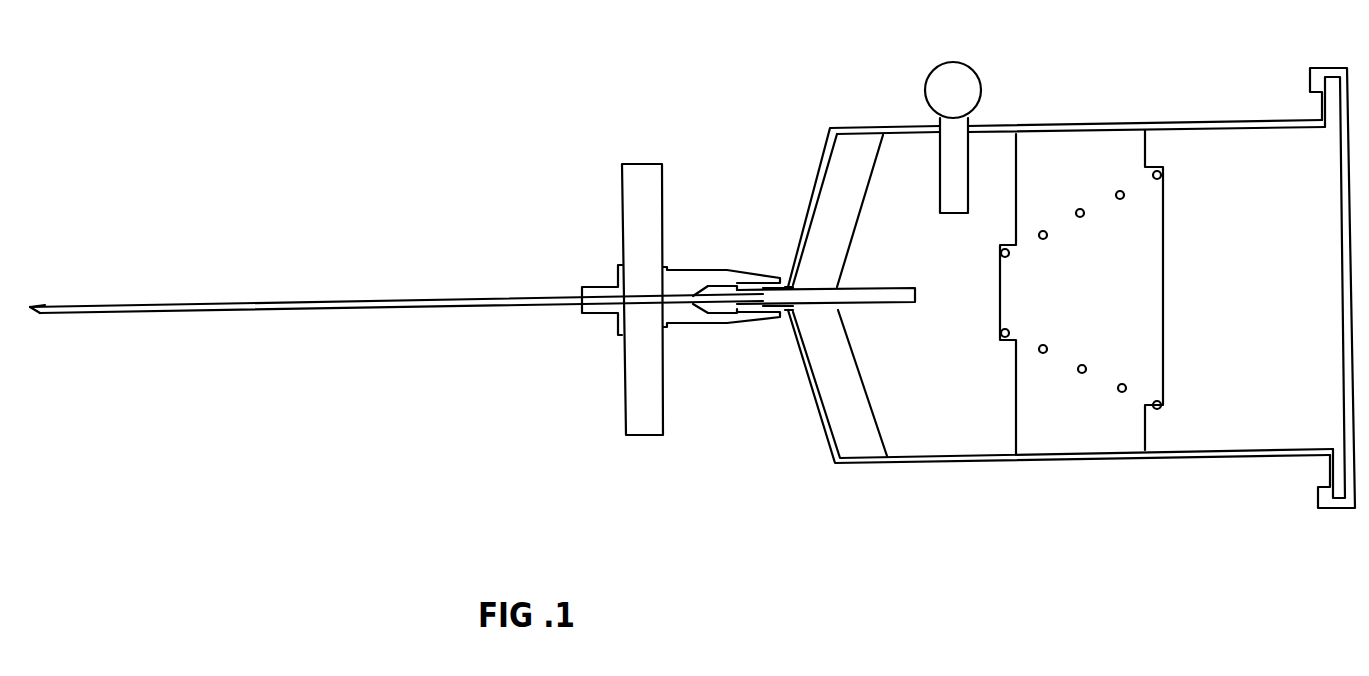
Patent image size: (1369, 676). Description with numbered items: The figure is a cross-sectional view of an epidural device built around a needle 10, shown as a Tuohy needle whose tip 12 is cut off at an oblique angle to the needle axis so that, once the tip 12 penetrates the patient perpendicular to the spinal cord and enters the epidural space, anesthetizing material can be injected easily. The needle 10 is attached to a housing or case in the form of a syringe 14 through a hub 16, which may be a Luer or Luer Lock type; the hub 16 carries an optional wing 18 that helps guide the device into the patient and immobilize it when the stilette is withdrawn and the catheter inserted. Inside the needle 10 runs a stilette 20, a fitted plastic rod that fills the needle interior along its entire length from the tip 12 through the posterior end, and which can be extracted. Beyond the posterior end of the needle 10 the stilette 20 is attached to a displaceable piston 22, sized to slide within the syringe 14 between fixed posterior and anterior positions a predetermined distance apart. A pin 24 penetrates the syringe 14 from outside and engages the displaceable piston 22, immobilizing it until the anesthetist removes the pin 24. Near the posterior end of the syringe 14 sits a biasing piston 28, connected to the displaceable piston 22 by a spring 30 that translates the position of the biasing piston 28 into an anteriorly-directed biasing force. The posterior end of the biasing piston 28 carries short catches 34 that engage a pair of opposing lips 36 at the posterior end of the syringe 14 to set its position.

The needle 10 is at (313, 302).
The tip 12 is at (43, 305).
The syringe 14 is at (1057, 460).
The hub 16 is at (702, 320).
The wing 18 is at (652, 177).
The stilette 20 is at (493, 299).
The displaceable piston 22 is at (925, 435).
The pin 24 is at (963, 80).
The biasing piston 28 is at (1203, 433).
The spring 30 is at (1080, 208).
The short catches 34 is at (1320, 66).
The lips 36 is at (1322, 108).